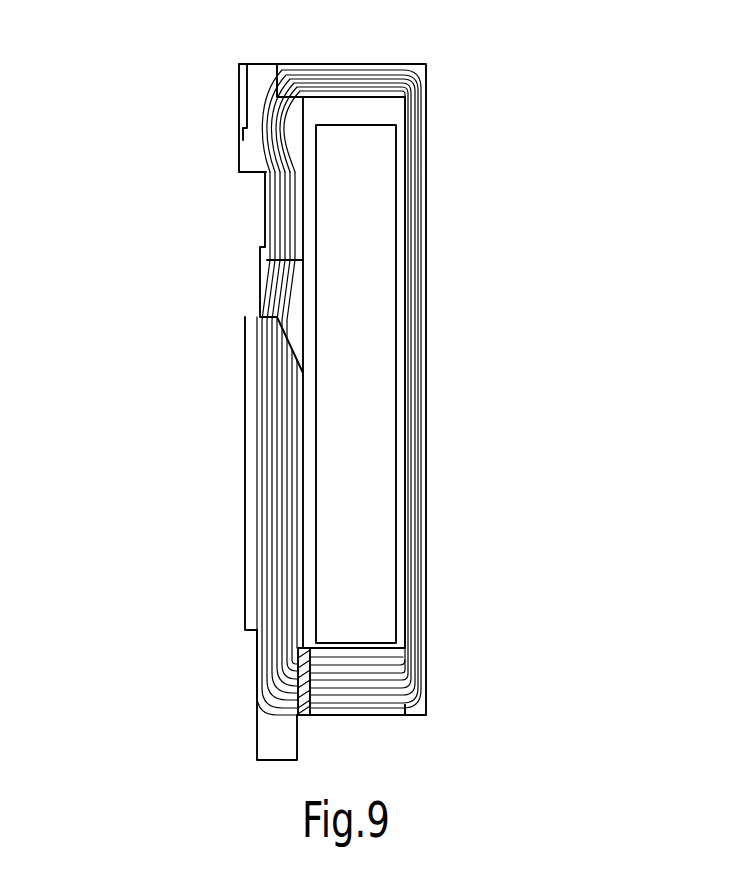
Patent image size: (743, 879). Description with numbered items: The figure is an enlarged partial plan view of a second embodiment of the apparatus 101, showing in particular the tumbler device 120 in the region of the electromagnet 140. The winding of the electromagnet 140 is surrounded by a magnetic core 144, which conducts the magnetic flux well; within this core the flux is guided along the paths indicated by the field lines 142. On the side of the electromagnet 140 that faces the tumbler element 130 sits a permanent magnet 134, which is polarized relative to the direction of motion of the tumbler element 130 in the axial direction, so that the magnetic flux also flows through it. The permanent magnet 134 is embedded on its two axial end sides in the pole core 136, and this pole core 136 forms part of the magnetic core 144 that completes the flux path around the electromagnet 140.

The apparatus 101 is at (477, 107).
The tumbler device 120 is at (367, 387).
The tumbler element 130 is at (277, 727).
The permanent magnet 134 is at (285, 235).
The pole core 136 is at (257, 153).
The electromagnet 140 is at (362, 458).
The field lines 142 is at (418, 705).
The magnetic core 144 is at (425, 667).